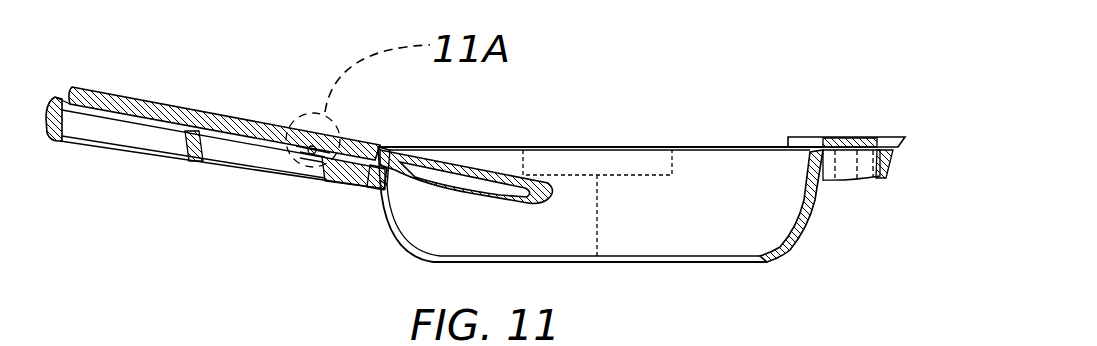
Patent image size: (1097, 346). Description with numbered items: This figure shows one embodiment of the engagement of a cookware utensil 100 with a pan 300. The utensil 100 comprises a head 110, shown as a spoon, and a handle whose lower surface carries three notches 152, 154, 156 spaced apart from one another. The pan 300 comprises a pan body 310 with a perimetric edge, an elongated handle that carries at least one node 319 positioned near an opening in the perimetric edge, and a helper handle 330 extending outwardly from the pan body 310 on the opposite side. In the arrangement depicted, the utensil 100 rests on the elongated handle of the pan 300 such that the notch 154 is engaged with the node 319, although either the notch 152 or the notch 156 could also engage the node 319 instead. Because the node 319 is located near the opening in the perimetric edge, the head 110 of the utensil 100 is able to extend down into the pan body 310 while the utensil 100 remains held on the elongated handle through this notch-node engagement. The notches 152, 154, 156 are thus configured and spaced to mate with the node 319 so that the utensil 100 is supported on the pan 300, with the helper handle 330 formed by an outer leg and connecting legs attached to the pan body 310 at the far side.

The cookware utensil 100 is at (86, 88).
The head 110 is at (512, 180).
The notch 152 is at (247, 142).
The notch 154 is at (314, 125).
The notch 156 is at (373, 182).
The pan 300 is at (690, 131).
The pan body 310 is at (804, 230).
The node 319 is at (316, 160).
The helper handle 330 is at (887, 167).